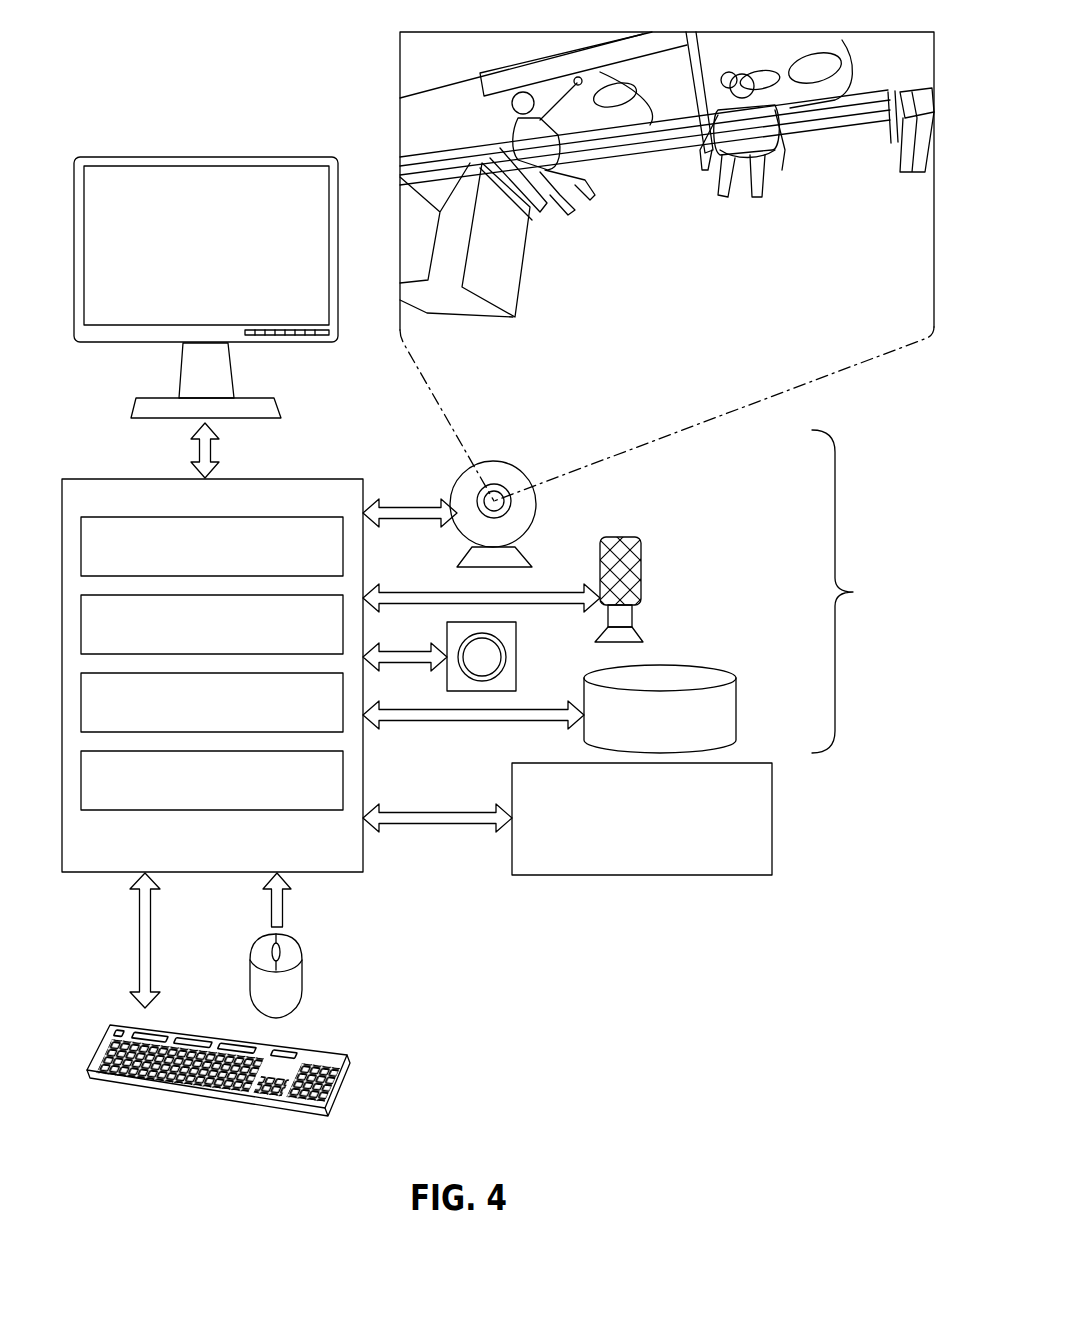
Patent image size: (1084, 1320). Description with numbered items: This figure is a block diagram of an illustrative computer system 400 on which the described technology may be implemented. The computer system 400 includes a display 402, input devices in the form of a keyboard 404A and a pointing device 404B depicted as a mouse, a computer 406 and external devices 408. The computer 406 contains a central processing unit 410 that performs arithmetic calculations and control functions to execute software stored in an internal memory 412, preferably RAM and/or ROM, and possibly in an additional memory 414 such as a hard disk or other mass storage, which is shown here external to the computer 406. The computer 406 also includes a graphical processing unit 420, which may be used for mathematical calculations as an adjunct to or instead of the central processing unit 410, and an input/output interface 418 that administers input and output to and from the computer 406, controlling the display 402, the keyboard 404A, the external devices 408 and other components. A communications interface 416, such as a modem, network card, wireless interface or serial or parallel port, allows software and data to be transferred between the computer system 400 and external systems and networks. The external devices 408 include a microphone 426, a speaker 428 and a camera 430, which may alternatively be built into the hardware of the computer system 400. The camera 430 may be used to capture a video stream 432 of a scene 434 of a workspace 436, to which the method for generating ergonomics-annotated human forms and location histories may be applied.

The computer system 400 is at (722, 990).
The display 402 is at (229, 258).
The keyboard 404A is at (343, 1078).
The pointing device 404B is at (303, 962).
The computer 406 is at (242, 852).
The external devices 408 is at (862, 591).
The central processing unit 410 is at (317, 639).
The internal memory 412 is at (317, 795).
The additional memory 414 is at (685, 738).
The communications interface 416 is at (744, 867).
The input/output interface 418 is at (317, 560).
The graphical processing unit 420 is at (317, 717).
The microphone 426 is at (641, 560).
The speaker 428 is at (517, 645).
The camera 430 is at (536, 505).
The video stream 432 is at (638, 414).
The scene 434 is at (368, 47).
The workspace 436 is at (675, 357).